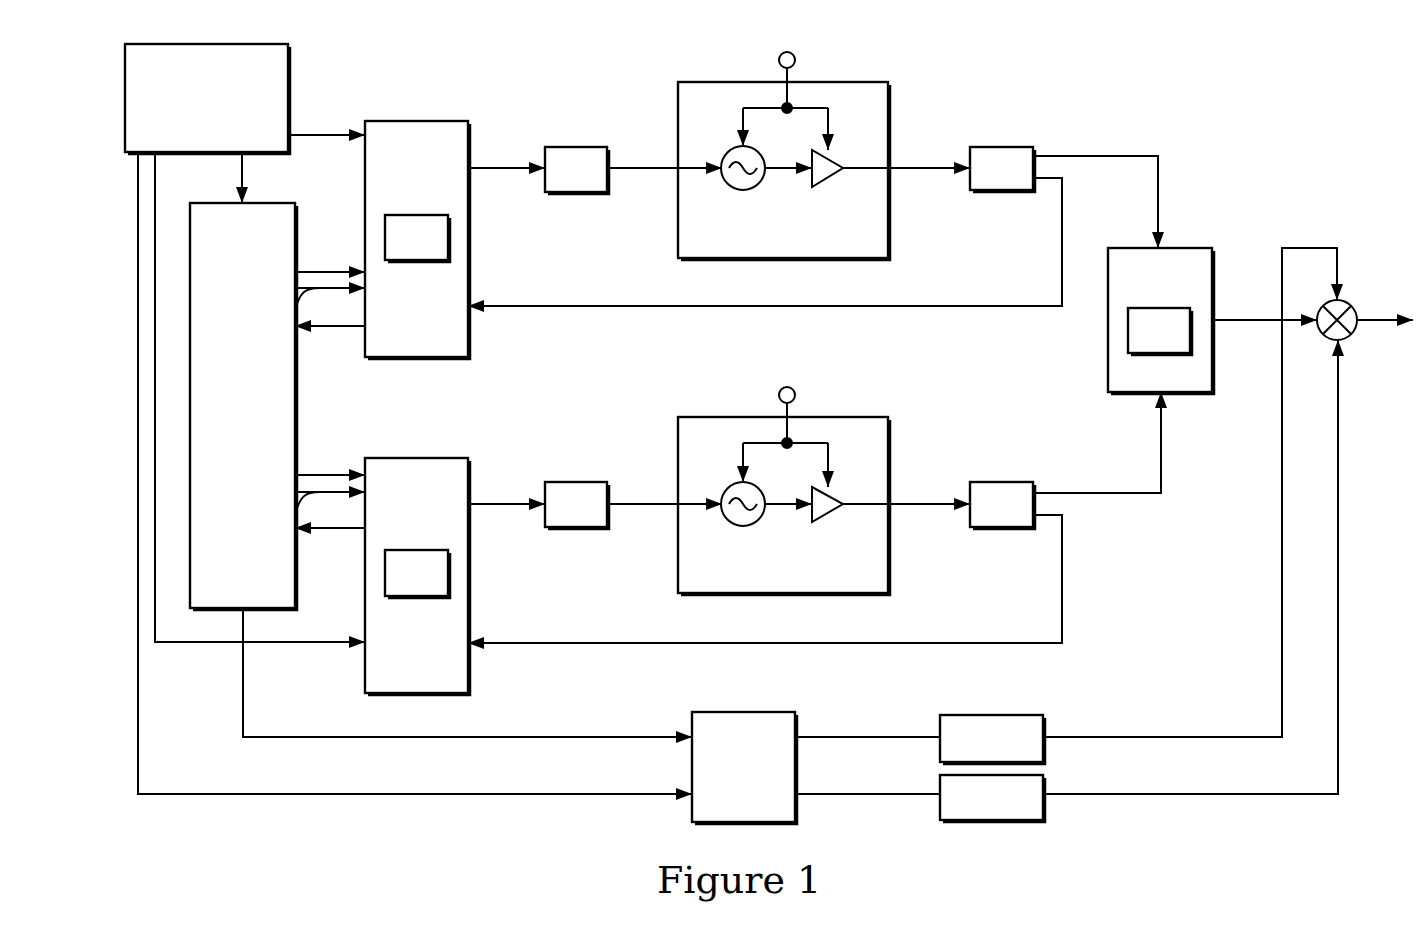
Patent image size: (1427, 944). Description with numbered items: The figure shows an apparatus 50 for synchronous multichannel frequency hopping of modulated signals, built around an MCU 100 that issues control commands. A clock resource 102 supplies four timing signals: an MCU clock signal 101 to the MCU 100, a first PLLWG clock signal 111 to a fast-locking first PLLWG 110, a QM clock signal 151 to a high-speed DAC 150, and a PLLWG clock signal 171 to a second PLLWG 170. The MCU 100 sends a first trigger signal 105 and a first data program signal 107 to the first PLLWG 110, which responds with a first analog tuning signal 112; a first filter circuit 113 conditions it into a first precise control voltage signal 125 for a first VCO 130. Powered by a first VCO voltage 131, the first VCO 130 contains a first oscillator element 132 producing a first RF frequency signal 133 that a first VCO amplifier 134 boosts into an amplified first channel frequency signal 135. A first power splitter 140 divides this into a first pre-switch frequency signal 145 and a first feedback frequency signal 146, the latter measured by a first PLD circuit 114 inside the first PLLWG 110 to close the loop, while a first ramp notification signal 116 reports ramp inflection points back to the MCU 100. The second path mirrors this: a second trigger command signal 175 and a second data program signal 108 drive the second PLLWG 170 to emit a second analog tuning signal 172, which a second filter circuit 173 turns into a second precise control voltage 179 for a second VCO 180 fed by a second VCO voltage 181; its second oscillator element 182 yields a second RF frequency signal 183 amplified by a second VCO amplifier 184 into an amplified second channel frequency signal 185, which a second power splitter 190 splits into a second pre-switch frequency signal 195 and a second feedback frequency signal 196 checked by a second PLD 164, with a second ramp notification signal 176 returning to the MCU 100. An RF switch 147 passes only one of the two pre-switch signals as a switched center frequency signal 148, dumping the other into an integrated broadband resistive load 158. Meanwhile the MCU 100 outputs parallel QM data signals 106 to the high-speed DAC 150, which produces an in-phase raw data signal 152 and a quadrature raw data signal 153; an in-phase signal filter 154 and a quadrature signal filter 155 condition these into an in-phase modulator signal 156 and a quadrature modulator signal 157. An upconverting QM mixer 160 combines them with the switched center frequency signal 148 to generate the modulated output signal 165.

The apparatus 50 is at (1225, 88).
The MCU 100 is at (212, 388).
The MCU clock signal 101 is at (240, 178).
The clock resource 102 is at (140, 100).
The first trigger signal 105 is at (330, 270).
The parallel QM data signals 106 is at (467, 740).
The first data program signal 107 is at (292, 312).
The second data program signal 108 is at (292, 516).
The first PLLWG 110 is at (418, 130).
The first PLLWG clock signal 111 is at (330, 134).
The first analog tuning signal 112 is at (505, 165).
The first filter circuit 113 is at (576, 146).
The first PLD circuit 114 is at (415, 215).
The first ramp notification signal 116 is at (335, 328).
The first precise control voltage signal 125 is at (645, 165).
The first VCO 130 is at (718, 90).
The first VCO voltage 131 is at (796, 57).
The first oscillator element 132 is at (744, 192).
The first RF frequency signal 133 is at (788, 166).
The first VCO amplifier 134 is at (830, 186).
The amplified first channel frequency signal 135 is at (930, 165).
The first power splitter 140 is at (1003, 152).
The first pre-switch frequency signal 145 is at (1095, 154).
The first feedback frequency signal 146 is at (988, 305).
The RF switch 147 is at (1118, 363).
The switched center frequency signal 148 is at (1250, 318).
The high-speed DAC 150 is at (701, 768).
The QM clock signal 151 is at (423, 797).
The in-phase raw data signal 152 is at (866, 736).
The quadrature raw data signal 153 is at (866, 796).
The in-phase signal filter 154 is at (993, 724).
The quadrature signal filter 155 is at (992, 818).
The in-phase modulator signal 156 is at (1190, 492).
The quadrature modulator signal 157 is at (1338, 572).
The broadband resistive load 158 is at (1158, 308).
The upconverting QM mixer 160 is at (1351, 305).
The second PLD 164 is at (415, 550).
The modulated output signal 165 is at (1380, 321).
The second PLLWG 170 is at (418, 462).
The PLLWG clock signal 171 is at (197, 645).
The second analog tuning signal 172 is at (505, 502).
The second filter circuit 173 is at (576, 481).
The second trigger command signal 175 is at (332, 472).
The second ramp notification signal 176 is at (335, 530).
The second precise control voltage 179 is at (645, 502).
The second VCO 180 is at (718, 425).
The second VCO voltage 181 is at (796, 392).
The second oscillator element 182 is at (744, 528).
The second RF frequency signal 183 is at (788, 502).
The second VCO amplifier 184 is at (830, 521).
The amplified second channel frequency signal 185 is at (930, 502).
The second power splitter 190 is at (1003, 491).
The second pre-switch frequency signal 195 is at (1095, 491).
The second feedback frequency signal 196 is at (988, 640).